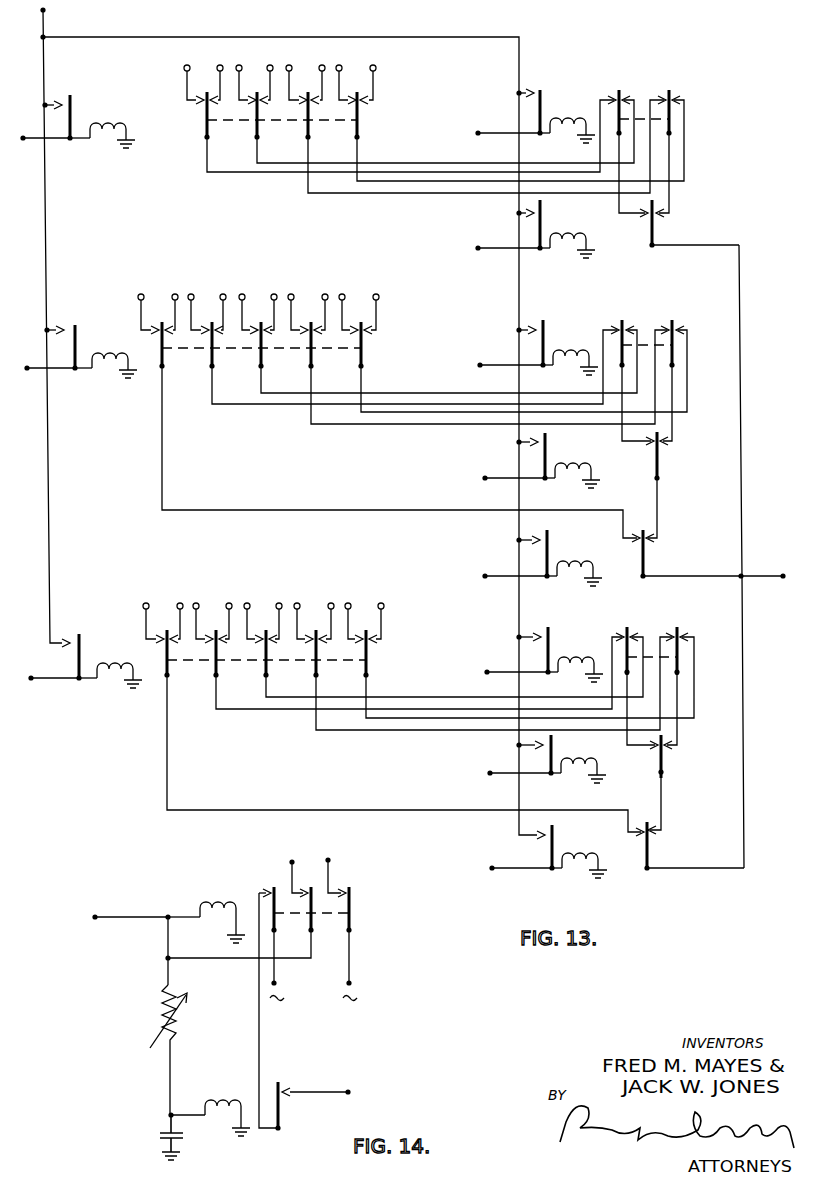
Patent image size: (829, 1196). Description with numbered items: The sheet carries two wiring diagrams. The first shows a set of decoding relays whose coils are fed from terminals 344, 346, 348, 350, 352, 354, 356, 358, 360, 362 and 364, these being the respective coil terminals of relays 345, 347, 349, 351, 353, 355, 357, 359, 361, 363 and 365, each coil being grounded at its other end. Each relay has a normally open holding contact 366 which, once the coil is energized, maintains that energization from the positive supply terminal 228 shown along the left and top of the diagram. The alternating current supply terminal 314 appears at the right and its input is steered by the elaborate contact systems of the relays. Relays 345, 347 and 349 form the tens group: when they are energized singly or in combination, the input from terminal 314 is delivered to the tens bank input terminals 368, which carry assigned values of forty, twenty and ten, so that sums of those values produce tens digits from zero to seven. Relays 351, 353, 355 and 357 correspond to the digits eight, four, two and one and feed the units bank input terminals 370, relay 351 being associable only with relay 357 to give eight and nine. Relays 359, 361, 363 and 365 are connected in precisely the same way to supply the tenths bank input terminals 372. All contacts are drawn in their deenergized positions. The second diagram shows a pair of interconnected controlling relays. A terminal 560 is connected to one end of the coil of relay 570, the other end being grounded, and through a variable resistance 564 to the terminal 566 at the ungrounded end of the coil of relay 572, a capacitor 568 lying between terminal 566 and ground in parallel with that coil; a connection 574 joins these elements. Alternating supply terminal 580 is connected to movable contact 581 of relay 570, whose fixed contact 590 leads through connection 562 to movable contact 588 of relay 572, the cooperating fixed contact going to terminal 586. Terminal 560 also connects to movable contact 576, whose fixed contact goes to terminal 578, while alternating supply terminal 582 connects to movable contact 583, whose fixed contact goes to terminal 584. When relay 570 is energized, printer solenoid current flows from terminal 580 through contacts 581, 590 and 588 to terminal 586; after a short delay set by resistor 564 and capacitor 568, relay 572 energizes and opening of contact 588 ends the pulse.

In FIG. 13, the supply terminal 228 is at (46, 12).
In FIG. 13, the alternating current supply terminal 314 is at (783, 579).
In FIG. 13, the terminal 344 is at (476, 250).
In FIG. 13, the relay 345 is at (580, 230).
In FIG. 13, the terminal 346 is at (476, 135).
In FIG. 13, the relay 347 is at (573, 100).
In FIG. 13, the terminal 348 is at (23, 141).
In FIG. 13, the relay 349 is at (108, 112).
In FIG. 13, the terminal 350 is at (483, 578).
In FIG. 13, the relay 351 is at (595, 556).
In FIG. 13, the terminal 352 is at (483, 480).
In FIG. 13, the relay 353 is at (591, 457).
In FIG. 13, the terminal 354 is at (478, 367).
In FIG. 13, the relay 355 is at (580, 328).
In FIG. 13, the terminal 356 is at (27, 371).
In FIG. 13, the relay 357 is at (105, 348).
In FIG. 13, the terminal 358 is at (490, 870).
In FIG. 13, the relay 359 is at (598, 848).
In FIG. 13, the terminal 360 is at (488, 775).
In FIG. 13, the relay 361 is at (596, 757).
In FIG. 13, the terminal 362 is at (487, 675).
In FIG. 13, the relay 363 is at (582, 642).
In FIG. 13, the terminal 364 is at (31, 681).
In FIG. 13, the relay 365 is at (112, 655).
In FIG. 13, the holding contact 366 is at (73, 100).
In FIG. 13, the tens bank input terminals 368 is at (400, 67).
In FIG. 13, the units bank input terminals 370 is at (398, 297).
In FIG. 13, the tenths bank input terminals 372 is at (400, 603).
In FIG. 14, the terminal 560 is at (96, 914).
In FIG. 14, the connection 562 is at (258, 1050).
In FIG. 14, the variable resistance 564 is at (157, 1013).
In FIG. 14, the terminal 566 is at (169, 1115).
In FIG. 14, the capacitor 568 is at (160, 1138).
In FIG. 14, the relay 570 is at (224, 902).
In FIG. 14, the relay 572 is at (225, 1104).
In FIG. 14, the conductor 574 is at (194, 962).
In FIG. 14, the movable contact 576 is at (313, 924).
In FIG. 14, the terminal 578 is at (289, 862).
In FIG. 14, the alternating supply terminal 580 is at (279, 983).
In FIG. 14, the movable contact 581 is at (279, 924).
In FIG. 14, the alternating supply terminal 582 is at (354, 983).
In FIG. 14, the movable contact 583 is at (352, 913).
In FIG. 14, the terminal 584 is at (331, 859).
In FIG. 14, the terminal 586 is at (351, 1089).
In FIG. 14, the movable contact 588 is at (280, 1113).
In FIG. 14, the fixed contact 590 is at (256, 909).